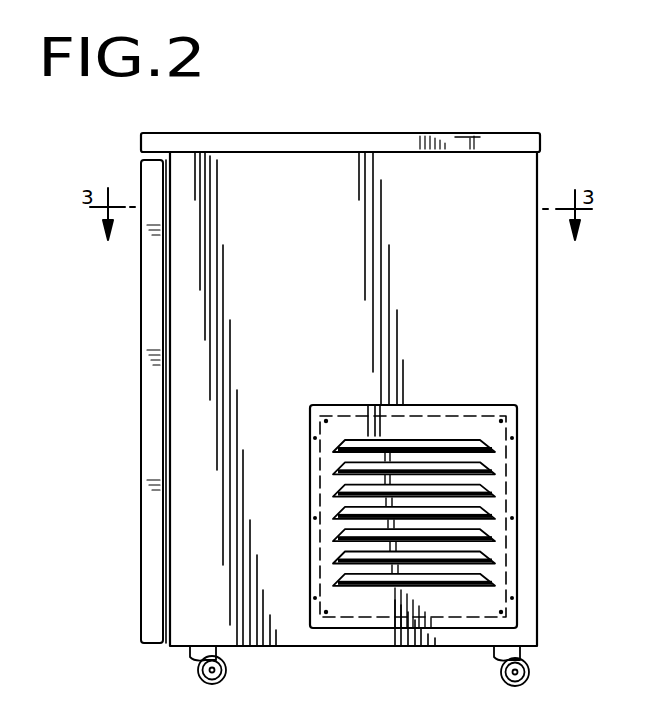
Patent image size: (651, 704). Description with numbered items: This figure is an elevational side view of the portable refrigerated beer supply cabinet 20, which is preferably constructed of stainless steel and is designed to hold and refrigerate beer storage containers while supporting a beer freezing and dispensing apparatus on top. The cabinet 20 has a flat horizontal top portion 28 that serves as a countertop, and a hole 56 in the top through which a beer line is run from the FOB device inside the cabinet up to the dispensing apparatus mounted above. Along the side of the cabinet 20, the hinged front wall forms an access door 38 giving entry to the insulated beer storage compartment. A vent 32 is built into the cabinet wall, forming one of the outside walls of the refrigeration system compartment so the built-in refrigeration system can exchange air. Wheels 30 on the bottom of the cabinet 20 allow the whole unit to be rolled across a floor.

The portable refrigerated beer supply cabinet 20 is at (438, 120).
The flat horizontal top portion 28 is at (495, 143).
The hole 56 is at (468, 135).
The access door 38 is at (140, 310).
The vent 32 is at (497, 539).
The wheels 30 is at (225, 672).